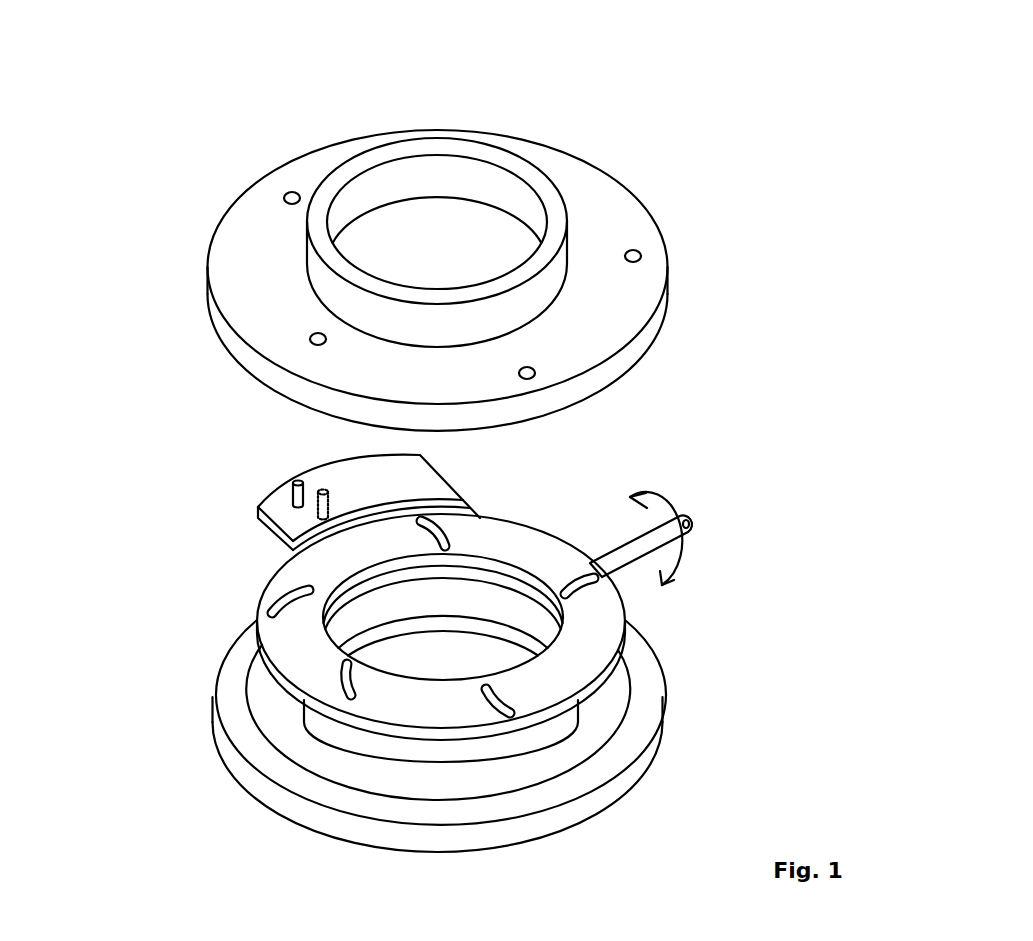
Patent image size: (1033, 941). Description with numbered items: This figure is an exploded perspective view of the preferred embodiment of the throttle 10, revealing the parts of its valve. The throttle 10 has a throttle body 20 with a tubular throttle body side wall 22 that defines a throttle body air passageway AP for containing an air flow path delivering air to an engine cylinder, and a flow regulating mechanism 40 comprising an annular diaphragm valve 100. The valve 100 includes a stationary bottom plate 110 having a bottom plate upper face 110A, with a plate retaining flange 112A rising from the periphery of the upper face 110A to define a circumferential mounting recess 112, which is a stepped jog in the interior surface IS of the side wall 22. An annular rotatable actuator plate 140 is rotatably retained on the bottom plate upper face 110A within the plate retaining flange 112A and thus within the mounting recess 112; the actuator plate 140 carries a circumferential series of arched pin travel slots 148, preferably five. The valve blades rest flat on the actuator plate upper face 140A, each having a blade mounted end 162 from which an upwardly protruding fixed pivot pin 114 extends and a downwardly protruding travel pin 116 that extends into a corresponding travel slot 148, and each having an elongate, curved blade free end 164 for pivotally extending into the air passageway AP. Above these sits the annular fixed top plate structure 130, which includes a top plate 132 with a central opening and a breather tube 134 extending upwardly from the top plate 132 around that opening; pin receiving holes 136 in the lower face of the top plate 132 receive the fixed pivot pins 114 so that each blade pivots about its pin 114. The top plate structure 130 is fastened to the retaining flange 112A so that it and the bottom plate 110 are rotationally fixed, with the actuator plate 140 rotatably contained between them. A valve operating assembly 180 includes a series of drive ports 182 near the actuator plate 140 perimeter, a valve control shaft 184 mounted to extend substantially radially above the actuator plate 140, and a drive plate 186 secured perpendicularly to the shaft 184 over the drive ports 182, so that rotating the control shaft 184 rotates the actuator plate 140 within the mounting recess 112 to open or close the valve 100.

The throttle 10 is at (796, 123).
The throttle body 20 is at (655, 332).
The throttle body side wall 22 is at (514, 348).
The flow regulating mechanism 40 is at (670, 418).
The annular diaphragm valve 100 is at (183, 463).
The stationary bottom plate 110 is at (613, 782).
The bottom plate upper face 110A is at (640, 720).
The mounting recess 112 is at (465, 595).
The plate retaining flange 112A is at (253, 733).
The fixed pivot pin 114 is at (283, 490).
The travel pin 116 is at (333, 506).
The fixed top plate structure 130 is at (405, 215).
The top plate 132 is at (238, 255).
The breather tube 134 is at (311, 258).
The pin receiving holes 136 is at (283, 188).
The rotatable actuator plate 140 is at (507, 545).
The actuator plate upper face 140A is at (262, 618).
The pin travel slots 148 is at (448, 536).
The blade mounted end 162 is at (258, 508).
The blade free end 164 is at (427, 488).
The valve operating assembly 180 is at (723, 484).
The drive ports 182 is at (598, 553).
The valve control shaft 184 is at (697, 535).
The drive plate 186 is at (686, 588).
The throttle body air passageway AP is at (443, 238).
The interior surface IS is at (342, 211).